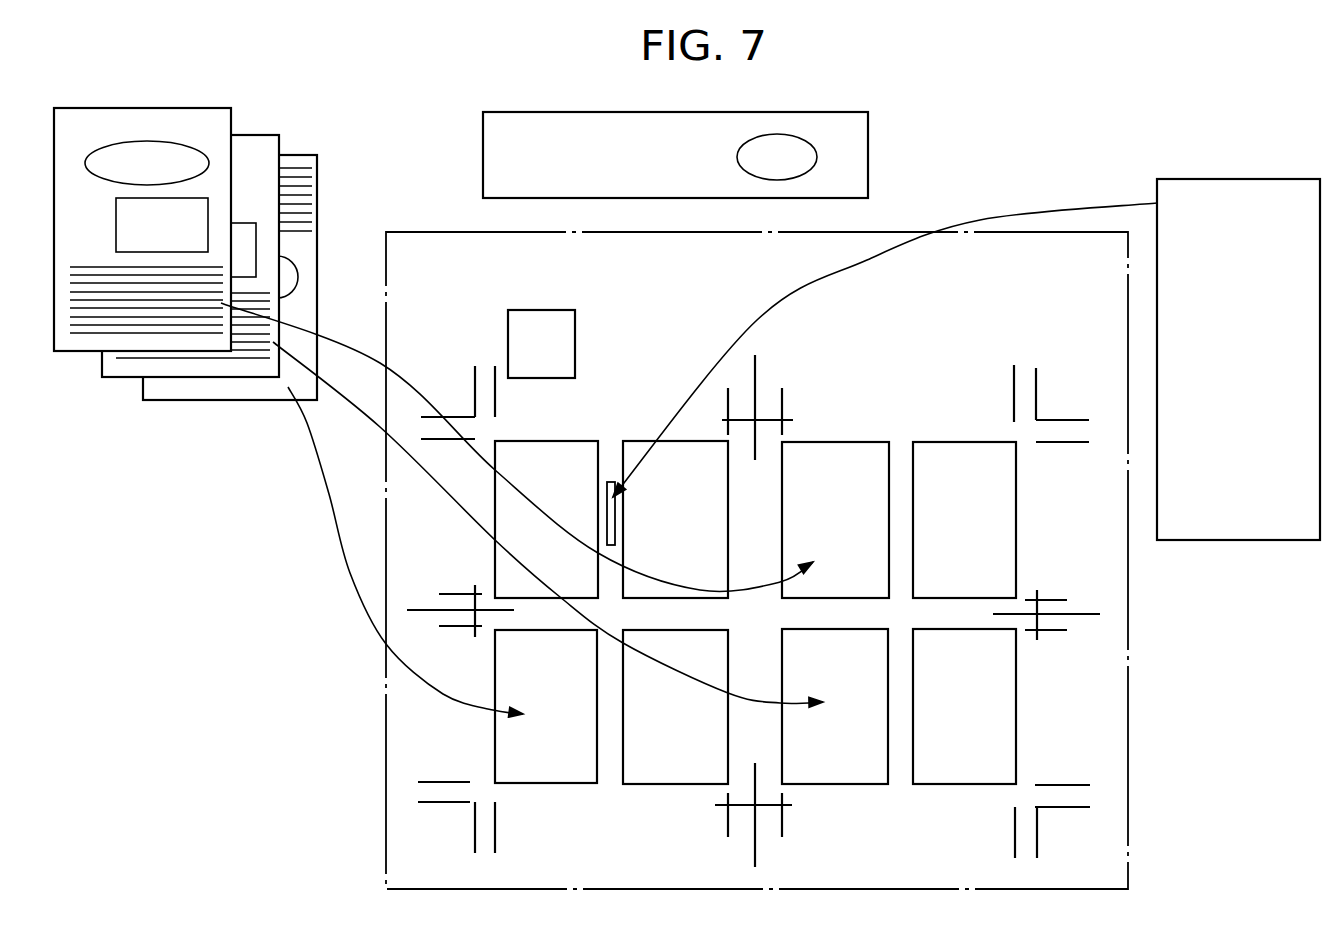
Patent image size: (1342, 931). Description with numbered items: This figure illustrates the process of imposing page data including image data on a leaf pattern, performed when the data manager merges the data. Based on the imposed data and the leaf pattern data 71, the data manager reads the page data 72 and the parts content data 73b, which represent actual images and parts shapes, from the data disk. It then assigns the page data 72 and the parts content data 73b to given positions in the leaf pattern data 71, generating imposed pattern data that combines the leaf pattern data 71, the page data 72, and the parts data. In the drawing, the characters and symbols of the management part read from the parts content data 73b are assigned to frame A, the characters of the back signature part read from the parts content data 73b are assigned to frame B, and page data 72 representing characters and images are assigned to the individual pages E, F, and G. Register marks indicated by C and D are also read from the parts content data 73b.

The leaf pattern data 71 is at (867, 230).
The page data 72 is at (220, 108).
The parts content data 73b is at (868, 137).